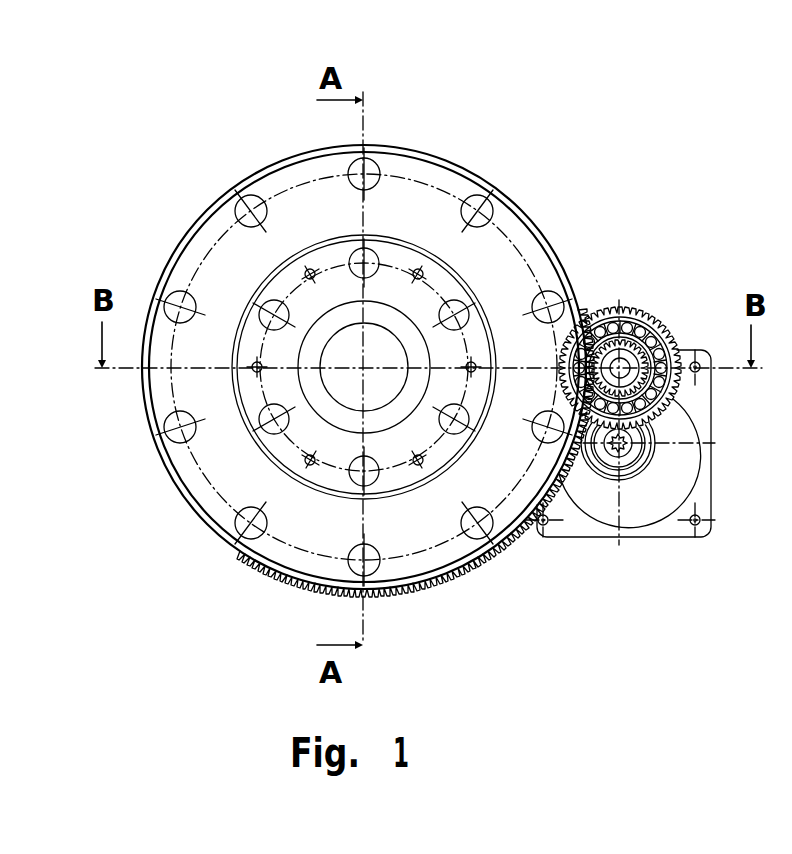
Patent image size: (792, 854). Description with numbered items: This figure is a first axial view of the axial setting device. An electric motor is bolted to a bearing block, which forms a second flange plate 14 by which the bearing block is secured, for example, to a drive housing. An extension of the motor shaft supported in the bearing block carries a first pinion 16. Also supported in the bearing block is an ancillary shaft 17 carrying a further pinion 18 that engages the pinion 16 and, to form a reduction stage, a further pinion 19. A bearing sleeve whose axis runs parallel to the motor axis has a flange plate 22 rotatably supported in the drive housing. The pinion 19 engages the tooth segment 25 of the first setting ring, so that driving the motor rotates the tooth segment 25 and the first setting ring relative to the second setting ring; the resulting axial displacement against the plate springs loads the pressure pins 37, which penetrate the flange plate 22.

The second flange plate 14 is at (669, 523).
The first pinion 16 is at (597, 478).
The ancillary shaft 17 is at (597, 310).
The further pinion 18 is at (640, 308).
The further pinion 19 is at (670, 337).
The flange plate 22 is at (445, 178).
The tooth segment 25 is at (443, 583).
The pressure pins 37 is at (458, 302).